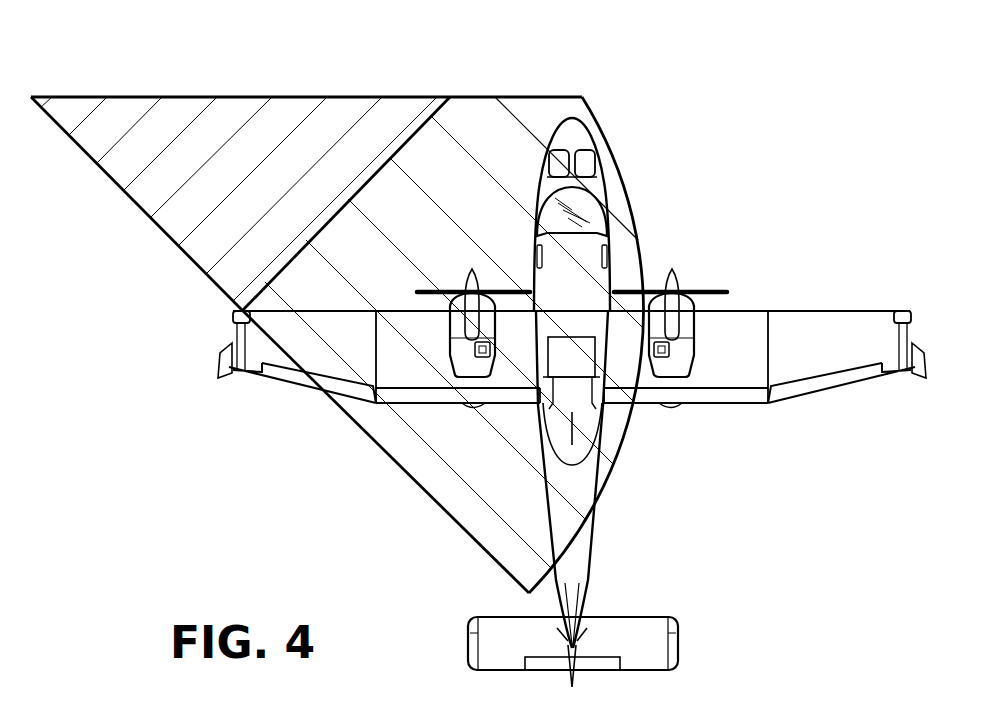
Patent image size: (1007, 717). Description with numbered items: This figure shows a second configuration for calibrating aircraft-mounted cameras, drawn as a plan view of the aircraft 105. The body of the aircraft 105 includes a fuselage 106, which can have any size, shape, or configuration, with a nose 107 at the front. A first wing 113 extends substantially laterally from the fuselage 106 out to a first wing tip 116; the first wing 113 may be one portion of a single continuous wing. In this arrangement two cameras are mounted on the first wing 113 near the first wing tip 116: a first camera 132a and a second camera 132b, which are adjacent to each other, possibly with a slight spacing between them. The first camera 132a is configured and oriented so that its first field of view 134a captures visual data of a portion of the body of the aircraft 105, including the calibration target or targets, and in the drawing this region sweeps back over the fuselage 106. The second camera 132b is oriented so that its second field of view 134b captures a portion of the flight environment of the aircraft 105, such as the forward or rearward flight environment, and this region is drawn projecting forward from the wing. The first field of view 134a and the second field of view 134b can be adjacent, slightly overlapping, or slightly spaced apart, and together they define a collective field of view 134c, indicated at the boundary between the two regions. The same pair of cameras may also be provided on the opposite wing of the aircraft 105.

The aircraft 105 is at (421, 504).
The fuselage 106 is at (582, 268).
The nose 107 is at (545, 135).
The first wing 113 is at (320, 403).
The first wing tip 116 is at (212, 358).
The first camera 132a is at (223, 337).
The second camera 132b is at (236, 313).
The first field of view 134a is at (567, 98).
The second field of view 134b is at (245, 97).
The collective field of view 134c is at (440, 95).